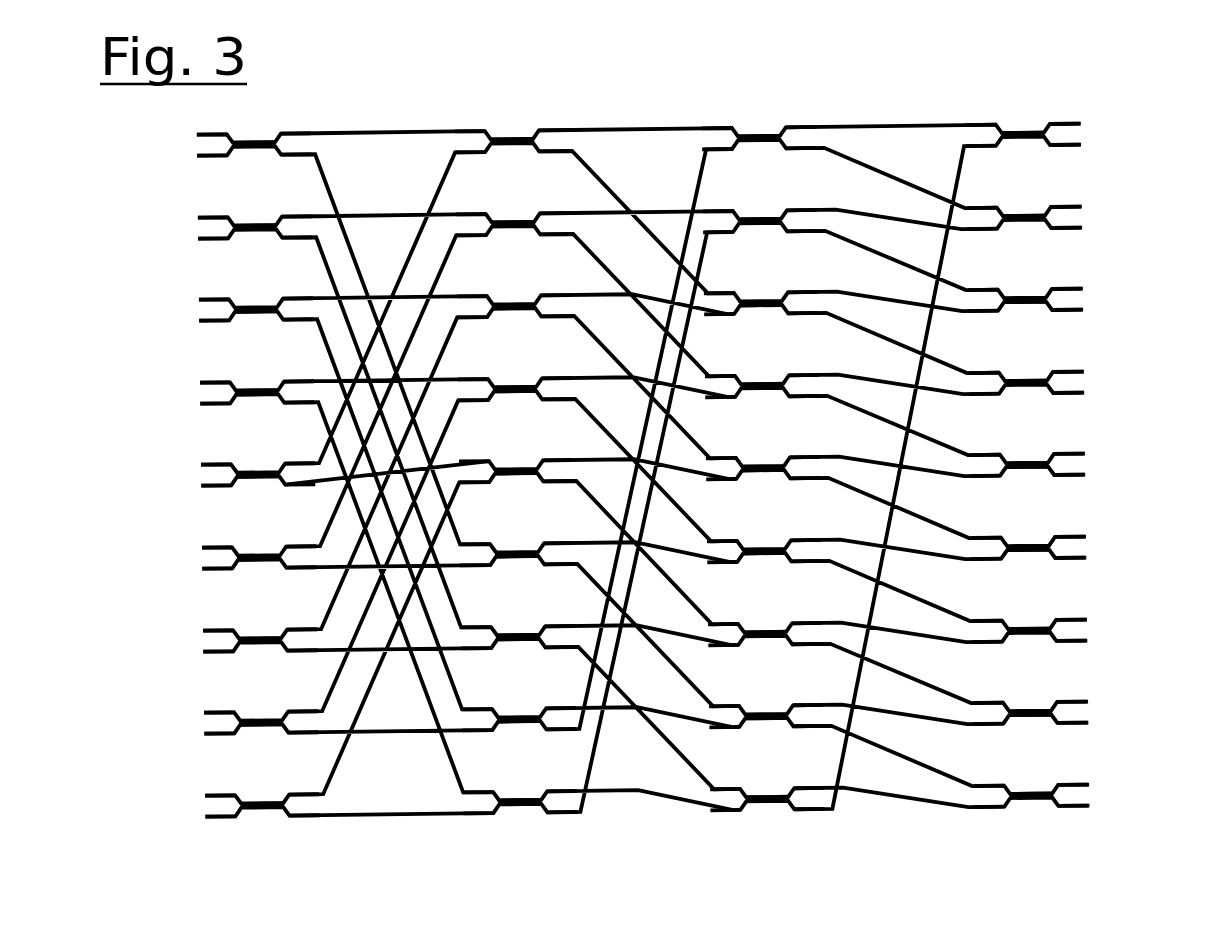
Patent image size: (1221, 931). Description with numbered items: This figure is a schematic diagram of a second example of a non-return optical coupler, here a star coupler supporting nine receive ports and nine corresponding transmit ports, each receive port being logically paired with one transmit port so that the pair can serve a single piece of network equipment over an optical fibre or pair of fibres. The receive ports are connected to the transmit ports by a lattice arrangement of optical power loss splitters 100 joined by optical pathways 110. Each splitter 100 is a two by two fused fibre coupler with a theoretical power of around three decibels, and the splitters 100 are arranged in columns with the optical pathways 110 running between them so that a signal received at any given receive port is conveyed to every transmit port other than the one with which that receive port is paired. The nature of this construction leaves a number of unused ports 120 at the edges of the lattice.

The optical power loss splitter 100 is at (253, 213).
The optical pathway 110 is at (342, 200).
The unused port 120 is at (185, 233).